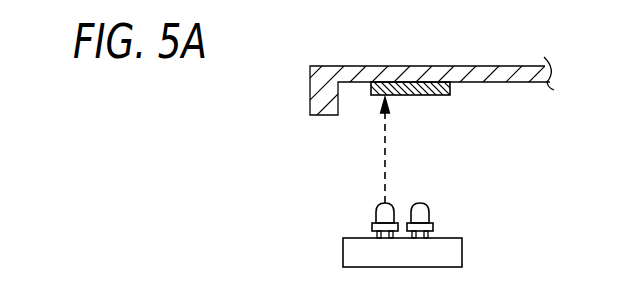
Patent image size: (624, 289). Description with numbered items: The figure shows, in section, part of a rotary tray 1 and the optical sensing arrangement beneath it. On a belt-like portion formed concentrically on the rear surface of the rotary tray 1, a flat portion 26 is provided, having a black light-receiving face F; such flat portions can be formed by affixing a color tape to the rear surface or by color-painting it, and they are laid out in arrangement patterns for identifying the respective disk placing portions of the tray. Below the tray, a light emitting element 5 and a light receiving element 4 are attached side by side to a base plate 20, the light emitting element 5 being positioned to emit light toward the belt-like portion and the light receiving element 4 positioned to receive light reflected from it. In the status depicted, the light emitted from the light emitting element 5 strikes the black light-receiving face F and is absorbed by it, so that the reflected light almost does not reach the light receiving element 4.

The rotary tray 1 is at (430, 66).
The flat portion 26 is at (452, 88).
The black light-receiving face F is at (427, 98).
The light emitting element 5 is at (374, 214).
The light receiving element 4 is at (433, 214).
The base plate 20 is at (452, 250).